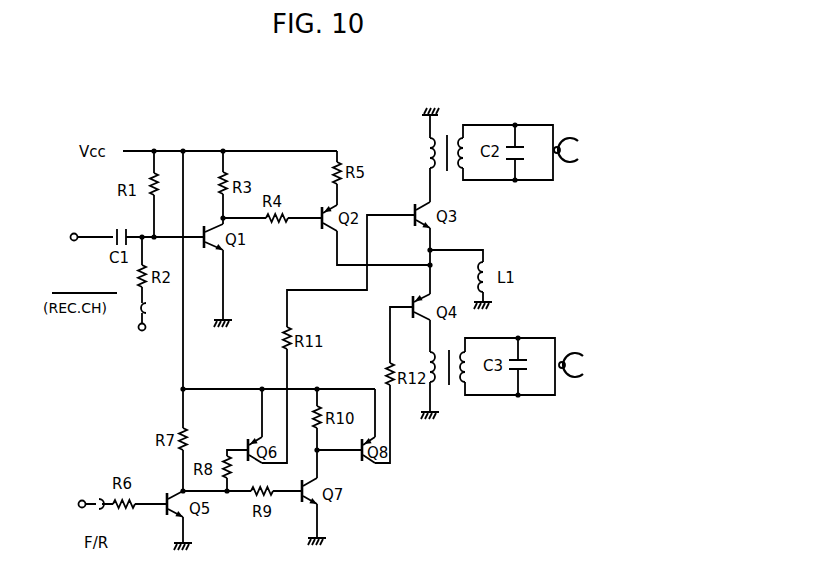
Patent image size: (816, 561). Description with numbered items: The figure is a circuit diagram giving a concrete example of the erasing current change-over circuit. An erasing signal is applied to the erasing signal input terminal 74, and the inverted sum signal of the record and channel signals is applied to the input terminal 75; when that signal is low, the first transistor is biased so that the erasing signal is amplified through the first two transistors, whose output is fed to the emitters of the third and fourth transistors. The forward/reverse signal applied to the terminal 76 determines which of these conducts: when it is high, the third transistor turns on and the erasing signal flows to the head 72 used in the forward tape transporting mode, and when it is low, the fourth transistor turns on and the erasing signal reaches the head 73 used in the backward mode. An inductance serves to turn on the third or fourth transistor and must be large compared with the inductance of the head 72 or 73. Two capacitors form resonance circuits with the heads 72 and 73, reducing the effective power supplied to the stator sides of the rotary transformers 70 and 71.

The rotary transformer 70 is at (452, 131).
The rotary transformer 71 is at (450, 386).
The head 72 is at (572, 163).
The head 73 is at (582, 378).
The erasing signal input terminal 74 is at (72, 233).
The input terminal for signal REC·CH 75 is at (142, 332).
The terminal 76 is at (80, 497).